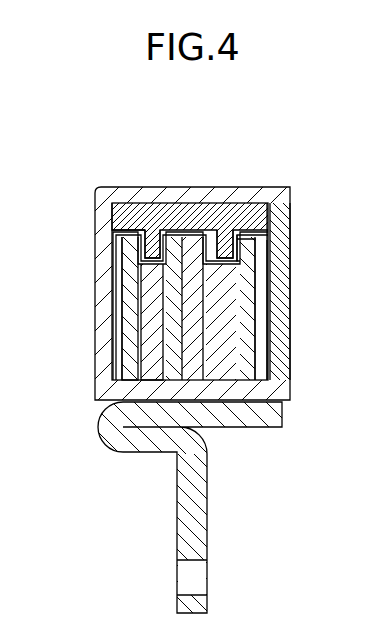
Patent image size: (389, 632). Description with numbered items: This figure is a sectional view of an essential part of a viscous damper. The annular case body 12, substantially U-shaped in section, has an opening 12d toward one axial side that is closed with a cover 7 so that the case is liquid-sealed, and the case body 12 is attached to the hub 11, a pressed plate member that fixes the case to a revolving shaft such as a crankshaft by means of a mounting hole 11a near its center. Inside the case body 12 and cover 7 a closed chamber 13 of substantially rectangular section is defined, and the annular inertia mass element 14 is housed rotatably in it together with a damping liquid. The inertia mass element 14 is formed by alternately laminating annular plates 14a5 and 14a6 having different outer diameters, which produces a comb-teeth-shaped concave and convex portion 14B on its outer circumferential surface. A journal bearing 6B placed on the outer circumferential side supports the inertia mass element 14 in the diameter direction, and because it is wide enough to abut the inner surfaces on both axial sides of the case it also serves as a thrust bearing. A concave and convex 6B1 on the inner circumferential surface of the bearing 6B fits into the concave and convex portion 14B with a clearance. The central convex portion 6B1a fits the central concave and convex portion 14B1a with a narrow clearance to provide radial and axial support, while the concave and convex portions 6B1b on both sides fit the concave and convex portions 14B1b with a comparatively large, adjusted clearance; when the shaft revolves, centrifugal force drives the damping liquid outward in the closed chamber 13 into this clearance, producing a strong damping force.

The journal bearing 6B is at (172, 186).
The concave and convex 6B1 is at (168, 210).
The convex portion 6B1a is at (203, 212).
The concave and convex portion 6B1b is at (113, 234).
The concave and convex portion 14B1a is at (242, 212).
The opening 12d is at (289, 218).
The case body 12 is at (104, 318).
The concave and convex portion 14B1b is at (139, 238).
The inertia mass element 14 is at (194, 249).
The concave and convex portion 14B is at (225, 281).
The cover 7 is at (282, 327).
The closed chamber 13 is at (262, 348).
The annular plate 14a5 is at (152, 312).
The annular plate 14a6 is at (133, 350).
The hub 11 is at (200, 542).
The mounting hole 11a is at (200, 587).